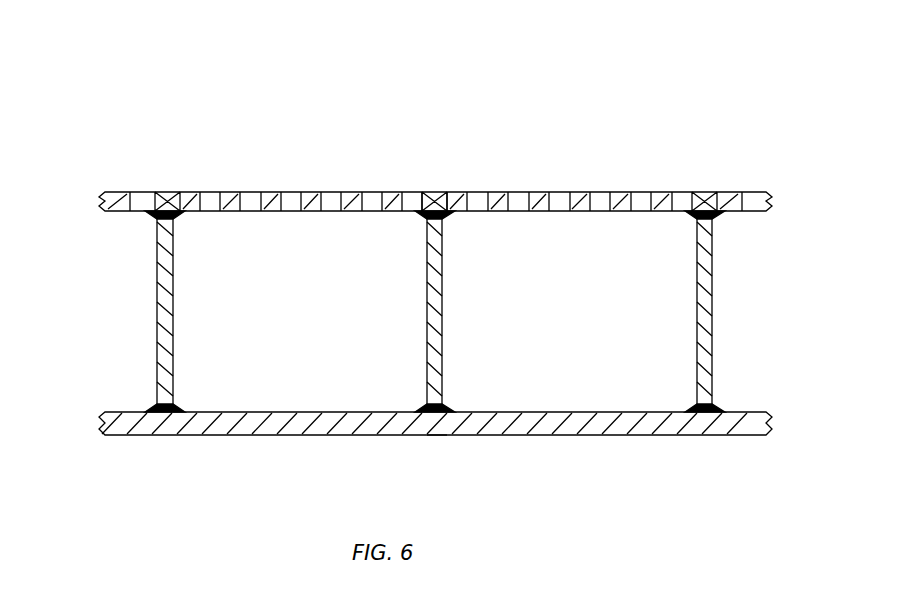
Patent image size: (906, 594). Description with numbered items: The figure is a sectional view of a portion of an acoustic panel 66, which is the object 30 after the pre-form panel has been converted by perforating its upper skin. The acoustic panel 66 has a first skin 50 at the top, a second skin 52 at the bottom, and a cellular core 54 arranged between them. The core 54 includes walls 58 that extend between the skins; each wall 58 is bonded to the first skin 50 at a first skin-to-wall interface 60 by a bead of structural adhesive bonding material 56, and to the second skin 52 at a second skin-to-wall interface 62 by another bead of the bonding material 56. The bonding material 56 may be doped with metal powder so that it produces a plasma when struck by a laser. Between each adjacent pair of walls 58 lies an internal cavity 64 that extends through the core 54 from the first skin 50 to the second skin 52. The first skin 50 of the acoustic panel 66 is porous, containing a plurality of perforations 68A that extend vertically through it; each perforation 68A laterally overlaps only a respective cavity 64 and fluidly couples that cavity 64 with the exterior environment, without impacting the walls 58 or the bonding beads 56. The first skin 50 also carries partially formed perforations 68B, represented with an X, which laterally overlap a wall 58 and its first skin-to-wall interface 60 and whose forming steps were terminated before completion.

The object 30 is at (643, 93).
The acoustic panel 66 is at (648, 88).
The first skin 50 is at (100, 195).
The second skin 52 is at (100, 436).
The cellular core 54 is at (84, 212).
The structural adhesive bonding material 56 is at (180, 218).
The walls 58 is at (173, 320).
The first skin-to-wall interface 60 is at (435, 192).
The second skin-to-wall interface 62 is at (432, 430).
The cavities 64 is at (133, 335).
The perforations 68A is at (377, 192).
The partially formed perforations 68B is at (178, 192).